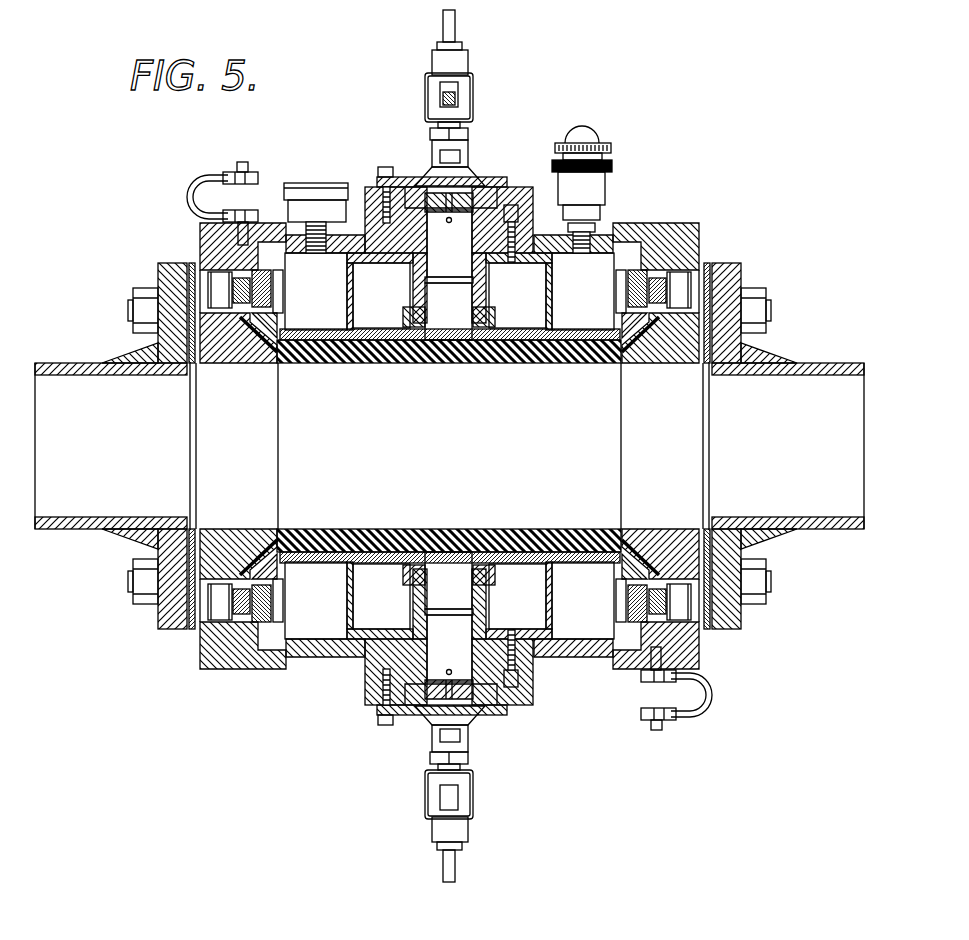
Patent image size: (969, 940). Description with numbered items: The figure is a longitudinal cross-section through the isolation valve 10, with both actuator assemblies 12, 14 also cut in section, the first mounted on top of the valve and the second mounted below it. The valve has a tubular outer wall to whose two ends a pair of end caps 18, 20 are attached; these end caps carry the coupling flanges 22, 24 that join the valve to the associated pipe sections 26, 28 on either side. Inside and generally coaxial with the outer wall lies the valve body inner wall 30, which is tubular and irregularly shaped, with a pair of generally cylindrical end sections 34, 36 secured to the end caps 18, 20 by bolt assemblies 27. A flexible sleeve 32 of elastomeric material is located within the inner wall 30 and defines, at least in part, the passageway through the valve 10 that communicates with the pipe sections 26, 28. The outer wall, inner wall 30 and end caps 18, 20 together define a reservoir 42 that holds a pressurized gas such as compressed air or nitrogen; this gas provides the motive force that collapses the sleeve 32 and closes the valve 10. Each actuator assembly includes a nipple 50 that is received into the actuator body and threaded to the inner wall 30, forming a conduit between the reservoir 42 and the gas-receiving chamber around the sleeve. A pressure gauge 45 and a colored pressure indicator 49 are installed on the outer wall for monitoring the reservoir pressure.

The valve 10 is at (705, 157).
The actuator assembly 12 is at (508, 120).
The actuator assembly 14 is at (370, 754).
The end cap 18 is at (692, 232).
The end cap 20 is at (214, 659).
The coupling flange 22 is at (736, 278).
The coupling flange 24 is at (163, 272).
The pipe section 26 is at (837, 363).
The bolt assembly 27 is at (222, 278).
The pipe section 28 is at (75, 368).
The valve body inner wall 30 is at (328, 332).
The flexible sleeve 32 is at (377, 357).
The end section 34 is at (597, 330).
The end section 36 is at (315, 562).
The reservoir 42 is at (584, 624).
The pressure gauge 45 is at (295, 187).
The colored pressure indicator 49 is at (602, 143).
The nipple 50 is at (460, 324).